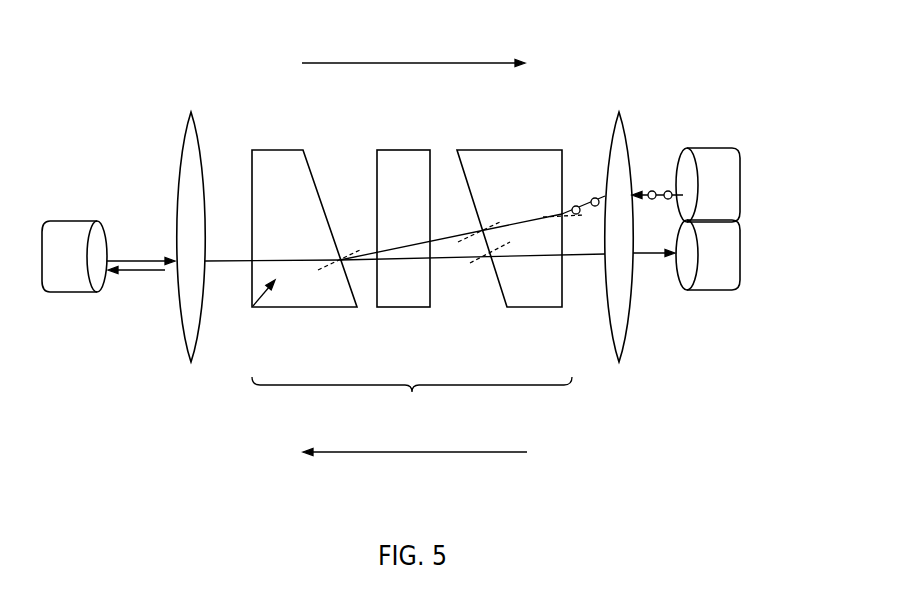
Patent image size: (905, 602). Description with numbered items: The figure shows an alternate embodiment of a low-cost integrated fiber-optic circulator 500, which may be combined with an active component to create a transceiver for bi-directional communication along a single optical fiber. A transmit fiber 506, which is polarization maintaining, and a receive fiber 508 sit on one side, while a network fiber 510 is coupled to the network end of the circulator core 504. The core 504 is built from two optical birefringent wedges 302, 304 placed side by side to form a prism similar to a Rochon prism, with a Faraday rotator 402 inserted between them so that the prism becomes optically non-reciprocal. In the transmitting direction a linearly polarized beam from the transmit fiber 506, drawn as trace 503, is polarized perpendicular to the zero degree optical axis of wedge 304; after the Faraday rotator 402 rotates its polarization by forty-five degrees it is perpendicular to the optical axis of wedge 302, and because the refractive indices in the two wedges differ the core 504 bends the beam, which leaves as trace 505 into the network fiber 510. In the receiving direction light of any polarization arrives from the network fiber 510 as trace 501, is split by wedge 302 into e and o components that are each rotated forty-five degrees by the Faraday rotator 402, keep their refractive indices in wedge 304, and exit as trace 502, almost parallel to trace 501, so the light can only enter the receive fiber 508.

The circulator 500 is at (610, 447).
The trace 501 is at (140, 245).
The trace 502 is at (647, 272).
The trace 503 is at (649, 176).
The circulator core 504 is at (412, 399).
The trace 505 is at (140, 286).
The transmit fiber 506 is at (783, 182).
The receive fiber 508 is at (762, 306).
The network fiber 510 is at (74, 205).
The birefringent wedge 302 is at (272, 166).
The birefringent wedge 304 is at (526, 178).
The Faraday rotator 402 is at (403, 166).